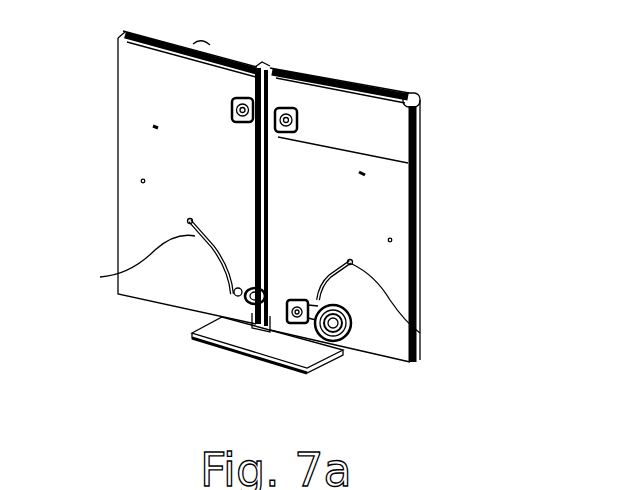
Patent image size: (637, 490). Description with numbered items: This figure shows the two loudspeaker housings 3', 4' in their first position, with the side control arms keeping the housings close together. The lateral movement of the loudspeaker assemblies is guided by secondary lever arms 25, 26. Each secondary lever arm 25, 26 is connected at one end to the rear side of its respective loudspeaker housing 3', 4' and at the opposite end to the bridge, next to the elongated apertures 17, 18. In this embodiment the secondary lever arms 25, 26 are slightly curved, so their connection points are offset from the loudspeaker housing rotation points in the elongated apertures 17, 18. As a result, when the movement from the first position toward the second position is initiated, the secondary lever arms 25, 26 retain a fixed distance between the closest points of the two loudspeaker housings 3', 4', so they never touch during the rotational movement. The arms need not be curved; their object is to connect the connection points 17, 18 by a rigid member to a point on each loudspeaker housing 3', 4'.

The loudspeaker housing 4' is at (157, 177).
The loudspeaker housing 3' is at (386, 215).
The elongated aperture 17 is at (247, 302).
The elongated aperture 18 is at (293, 320).
The secondary lever arm 25 is at (420, 333).
The secondary lever arm 26 is at (100, 277).